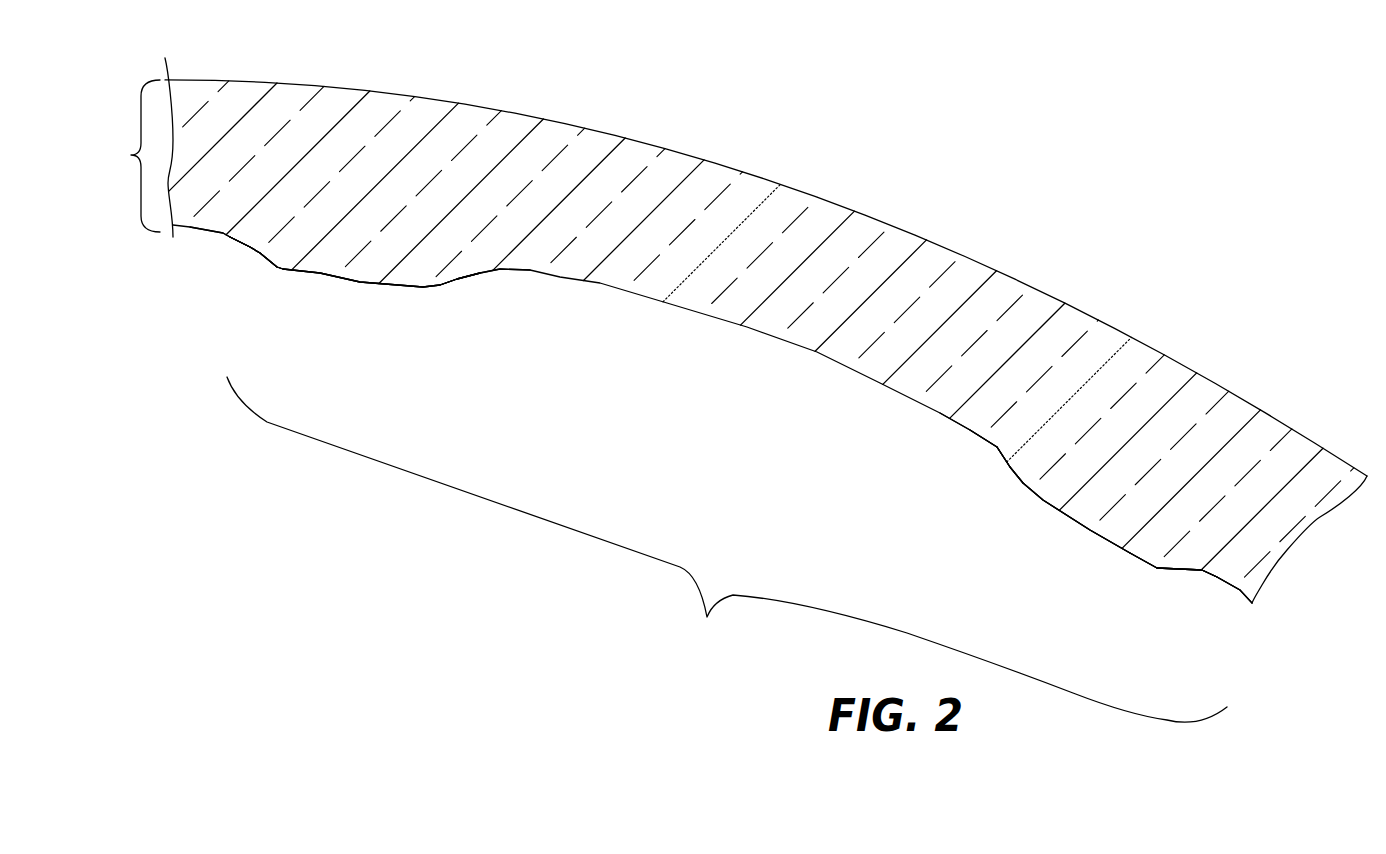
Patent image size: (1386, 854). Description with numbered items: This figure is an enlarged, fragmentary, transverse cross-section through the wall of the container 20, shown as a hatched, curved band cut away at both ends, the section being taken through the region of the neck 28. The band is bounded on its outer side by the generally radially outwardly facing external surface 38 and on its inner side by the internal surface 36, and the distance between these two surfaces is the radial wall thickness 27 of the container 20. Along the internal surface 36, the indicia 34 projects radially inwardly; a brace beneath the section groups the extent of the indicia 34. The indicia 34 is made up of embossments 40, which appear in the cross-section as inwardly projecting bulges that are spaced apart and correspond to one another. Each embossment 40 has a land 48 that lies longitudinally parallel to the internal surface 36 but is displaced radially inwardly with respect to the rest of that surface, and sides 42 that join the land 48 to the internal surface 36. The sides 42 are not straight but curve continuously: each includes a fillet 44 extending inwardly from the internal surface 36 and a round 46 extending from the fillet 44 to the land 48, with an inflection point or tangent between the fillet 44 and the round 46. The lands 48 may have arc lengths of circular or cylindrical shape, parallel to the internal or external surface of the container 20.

The container 20 is at (642, 88).
The radial wall thickness 27 is at (136, 147).
The neck 28 is at (1287, 548).
The indicia 34 is at (727, 549).
The internal surface 36 is at (747, 330).
The external surface 38 is at (748, 176).
The embossments 40 is at (403, 305).
The sides 42 is at (252, 267).
The fillets 44 is at (228, 234).
The rounds 46 is at (283, 271).
The lands 48 is at (360, 284).